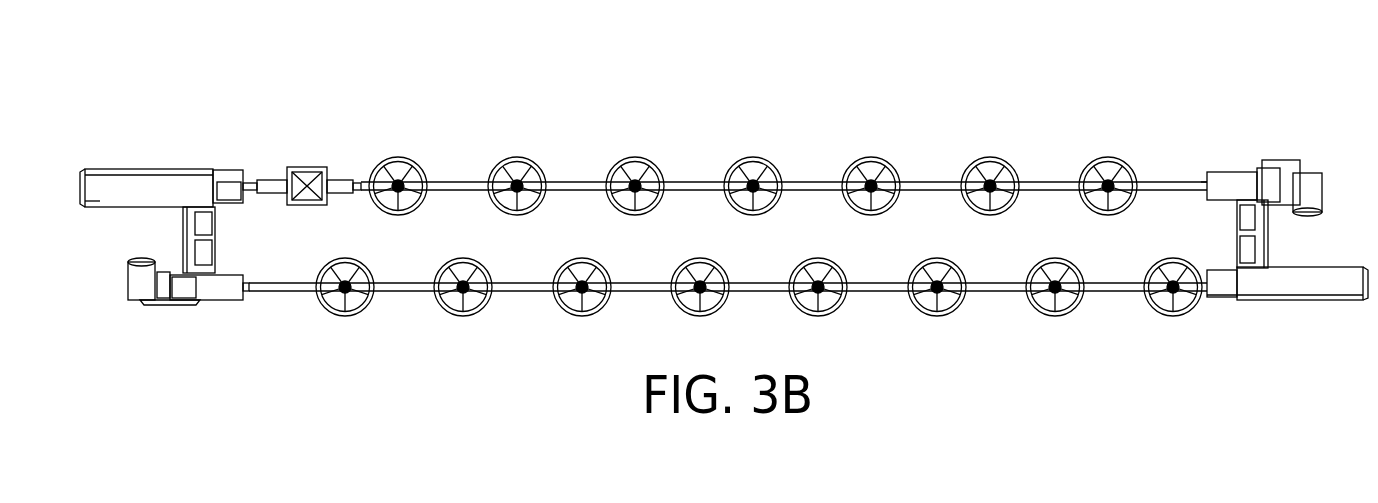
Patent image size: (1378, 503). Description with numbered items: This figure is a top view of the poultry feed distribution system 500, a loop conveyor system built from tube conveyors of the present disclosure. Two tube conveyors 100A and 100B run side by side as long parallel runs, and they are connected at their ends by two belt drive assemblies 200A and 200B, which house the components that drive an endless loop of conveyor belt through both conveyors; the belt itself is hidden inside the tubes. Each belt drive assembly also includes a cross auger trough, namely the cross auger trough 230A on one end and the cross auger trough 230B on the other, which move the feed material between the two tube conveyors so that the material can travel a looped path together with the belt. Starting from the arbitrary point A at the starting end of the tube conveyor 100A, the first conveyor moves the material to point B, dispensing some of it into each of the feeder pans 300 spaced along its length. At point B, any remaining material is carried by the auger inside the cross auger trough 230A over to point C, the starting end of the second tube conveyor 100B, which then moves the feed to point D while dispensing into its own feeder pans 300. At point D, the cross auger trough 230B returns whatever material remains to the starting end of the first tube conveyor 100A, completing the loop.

The belt drive assembly 200A is at (108, 168).
The belt drive assembly 200B is at (1322, 302).
The cross auger trough 230A is at (1268, 216).
The cross auger trough 230B is at (183, 225).
The tube conveyor 100A is at (818, 162).
The tube conveyor 100B is at (405, 292).
The feeder pan 300 is at (1070, 316).
The poultry feed distribution system 500 is at (963, 102).
The point A is at (218, 150).
The point B is at (1222, 162).
The point C is at (1240, 300).
The point D is at (217, 305).